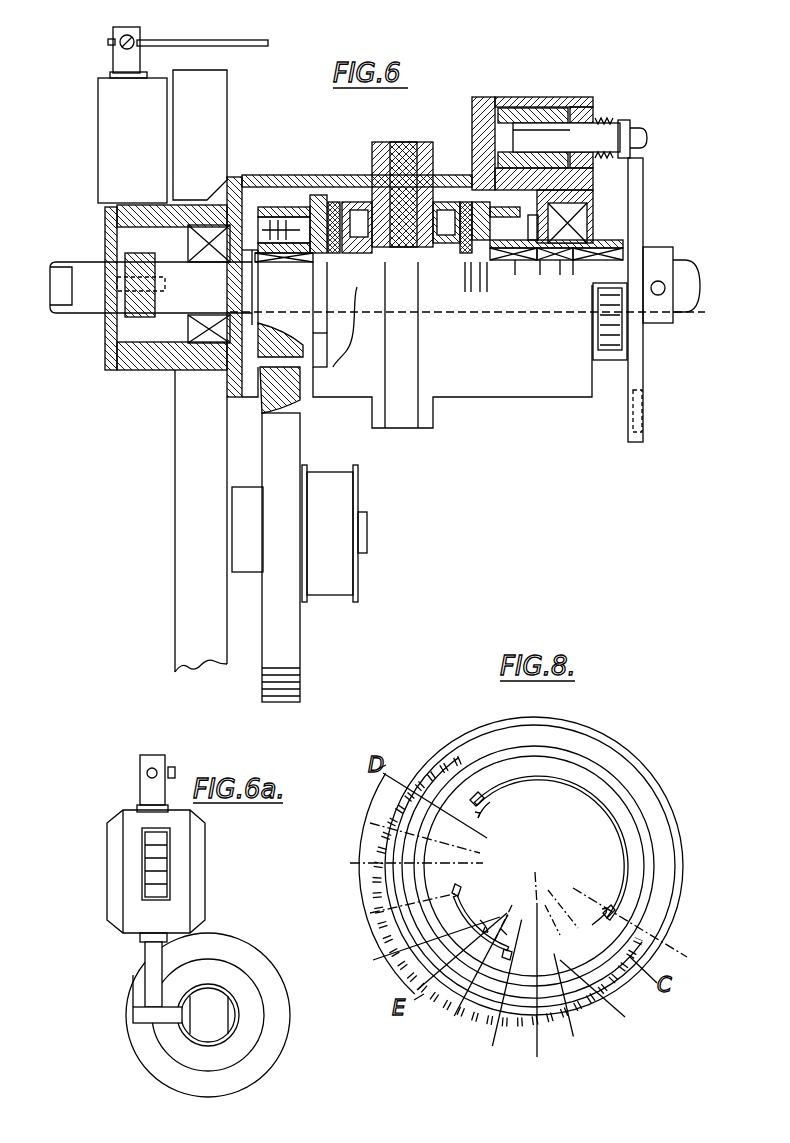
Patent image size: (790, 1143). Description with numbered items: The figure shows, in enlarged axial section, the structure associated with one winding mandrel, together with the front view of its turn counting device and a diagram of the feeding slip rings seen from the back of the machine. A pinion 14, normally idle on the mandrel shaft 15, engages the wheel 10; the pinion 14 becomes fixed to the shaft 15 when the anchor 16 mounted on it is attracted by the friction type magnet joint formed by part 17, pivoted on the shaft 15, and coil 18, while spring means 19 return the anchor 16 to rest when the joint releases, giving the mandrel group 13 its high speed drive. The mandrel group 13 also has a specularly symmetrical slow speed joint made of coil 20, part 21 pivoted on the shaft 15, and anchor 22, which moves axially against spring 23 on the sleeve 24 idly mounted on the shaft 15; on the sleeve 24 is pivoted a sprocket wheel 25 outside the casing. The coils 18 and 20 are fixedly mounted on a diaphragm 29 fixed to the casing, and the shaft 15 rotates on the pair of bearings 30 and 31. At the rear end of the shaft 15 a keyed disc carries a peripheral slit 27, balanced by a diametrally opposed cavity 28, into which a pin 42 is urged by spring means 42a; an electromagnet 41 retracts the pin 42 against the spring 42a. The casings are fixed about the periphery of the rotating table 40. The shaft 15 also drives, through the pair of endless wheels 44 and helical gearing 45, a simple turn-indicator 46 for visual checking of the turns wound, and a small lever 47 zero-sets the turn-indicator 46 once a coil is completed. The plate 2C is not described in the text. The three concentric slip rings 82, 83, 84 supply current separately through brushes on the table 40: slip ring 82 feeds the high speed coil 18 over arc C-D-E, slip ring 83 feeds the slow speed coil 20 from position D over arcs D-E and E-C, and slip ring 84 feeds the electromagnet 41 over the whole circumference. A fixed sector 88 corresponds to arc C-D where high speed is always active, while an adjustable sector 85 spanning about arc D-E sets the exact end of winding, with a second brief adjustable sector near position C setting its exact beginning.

In FIG. 6, the wheel 10 is at (272, 638).
In FIG. 6, the mandrel group 13 is at (320, 200).
In FIG. 6, the pinion 14 is at (297, 208).
In FIG. 6, the mandrel shaft 15 is at (97, 265).
In FIG. 6, the anchor 16 is at (332, 203).
In FIG. 6, the joint part 17 is at (345, 202).
In FIG. 6, the high speed joint coil 18 is at (380, 205).
In FIG. 6, the spring means 19 is at (275, 210).
In FIG. 6, the slow speed joint coil 20 is at (462, 168).
In FIG. 6, the joint part 21 is at (487, 203).
In FIG. 6, the anchor 22 is at (570, 117).
In FIG. 6, the spring 23 is at (520, 255).
In FIG. 6, the sleeve 24 is at (560, 255).
In FIG. 6, the sprocket wheel 25 is at (610, 360).
In FIG. 6, the slit 27 is at (645, 130).
In FIG. 6, the cavity 28 is at (640, 417).
In FIG. 6, the diaphragm 29 is at (423, 202).
In FIG. 6, the bearing 30 is at (567, 213).
In FIG. 6, the bearing 31 is at (190, 342).
In FIG. 6, the rotating table 40 is at (188, 483).
In FIG. 6, the electromagnet 41 is at (570, 117).
In FIG. 6, the pin 42 is at (633, 145).
In FIG. 6, the spring means 42a is at (620, 122).
In FIG. 6, the endless wheels 44 is at (140, 305).
In FIG. 6A, the helical gearing 45 is at (162, 1013).
In FIG. 6, the turn-indicator 46 is at (113, 165).
In FIG. 6A, the turn-indicator 46 is at (177, 868).
In FIG. 6, the lever 47 is at (200, 41).
In FIG. 6, the plate 2C is at (637, 345).
In FIG. 8, the slip ring 82 is at (507, 750).
In FIG. 8, the slip ring 83 is at (617, 985).
In FIG. 8, the slip ring 84 is at (638, 760).
In FIG. 8, the adjustable sector 85 is at (458, 875).
In FIG. 8, the fixed sector 88 is at (557, 772).